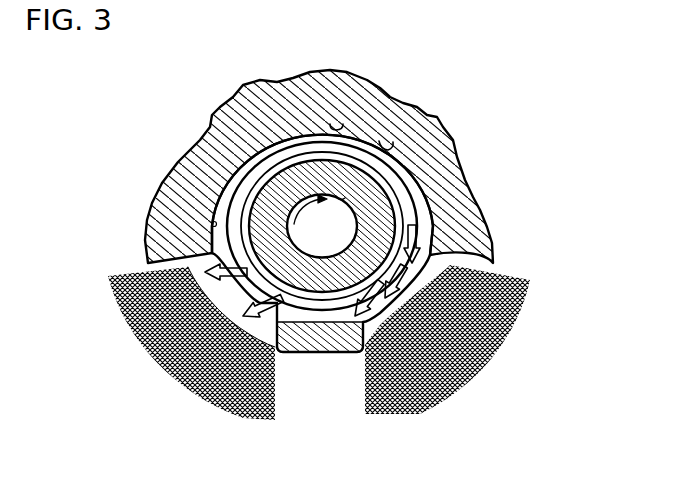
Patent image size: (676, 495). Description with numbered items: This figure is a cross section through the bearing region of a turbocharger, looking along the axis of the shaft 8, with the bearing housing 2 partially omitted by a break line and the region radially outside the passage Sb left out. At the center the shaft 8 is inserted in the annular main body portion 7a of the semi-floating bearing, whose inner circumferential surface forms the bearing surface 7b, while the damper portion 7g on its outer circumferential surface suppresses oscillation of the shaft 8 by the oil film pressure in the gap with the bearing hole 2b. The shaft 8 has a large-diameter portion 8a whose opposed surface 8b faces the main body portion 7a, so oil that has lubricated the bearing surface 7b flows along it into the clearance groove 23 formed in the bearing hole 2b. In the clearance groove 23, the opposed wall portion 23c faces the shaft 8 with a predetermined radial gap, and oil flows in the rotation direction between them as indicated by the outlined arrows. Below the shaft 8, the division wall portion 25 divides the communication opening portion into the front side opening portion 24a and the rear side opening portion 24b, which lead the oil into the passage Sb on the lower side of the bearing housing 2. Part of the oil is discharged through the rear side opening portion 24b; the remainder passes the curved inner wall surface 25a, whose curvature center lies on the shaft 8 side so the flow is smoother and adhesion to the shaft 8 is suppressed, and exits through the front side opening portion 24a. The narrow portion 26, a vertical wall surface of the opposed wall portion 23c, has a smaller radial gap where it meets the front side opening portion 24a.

The bearing housing 2 is at (262, 95).
The bearing hole 2b is at (331, 122).
The main body portion 7a is at (262, 157).
The bearing surface 7b is at (342, 198).
The damper portion 7g is at (402, 190).
The shaft 8 is at (328, 226).
The large-diameter portion 8a is at (268, 163).
The opposed surface 8b is at (247, 195).
The clearance groove 23 is at (212, 254).
The opposed wall portion 23c is at (390, 147).
The front side opening portion 24a is at (228, 293).
The rear side opening portion 24b is at (417, 290).
The division wall portion 25 is at (272, 336).
The inner wall surface 25a is at (288, 348).
The narrow portion 26 is at (212, 224).
The passage Sb is at (336, 396).